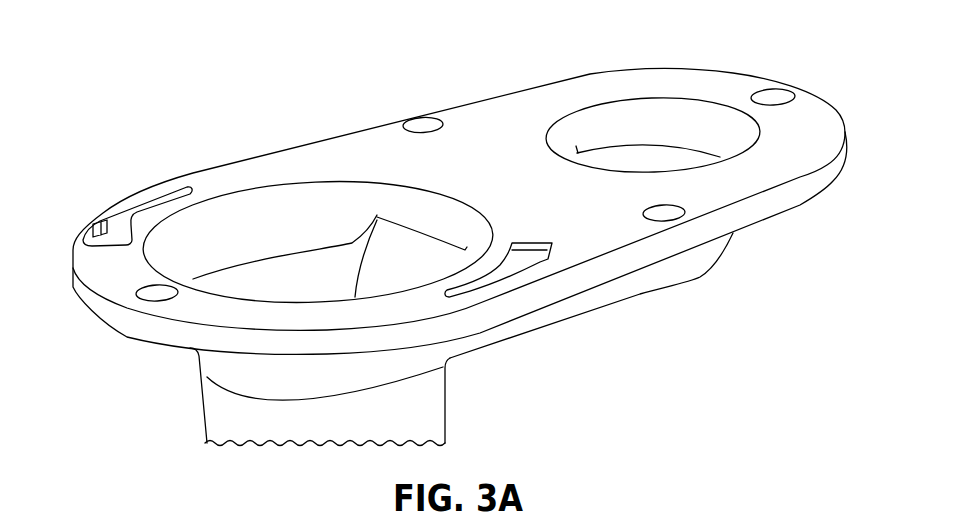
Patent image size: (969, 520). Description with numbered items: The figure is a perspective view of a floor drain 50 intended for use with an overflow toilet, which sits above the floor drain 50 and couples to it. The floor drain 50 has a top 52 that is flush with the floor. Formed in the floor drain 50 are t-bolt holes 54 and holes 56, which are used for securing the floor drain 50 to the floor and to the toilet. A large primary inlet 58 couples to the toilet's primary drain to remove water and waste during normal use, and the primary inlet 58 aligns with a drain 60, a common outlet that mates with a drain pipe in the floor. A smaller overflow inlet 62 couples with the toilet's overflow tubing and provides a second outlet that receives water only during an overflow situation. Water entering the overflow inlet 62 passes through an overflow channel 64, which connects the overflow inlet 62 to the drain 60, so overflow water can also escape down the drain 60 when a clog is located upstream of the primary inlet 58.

The floor drain 50 is at (326, 104).
The top 52 is at (810, 113).
The t-bolt holes 54 is at (118, 220).
The holes 56 is at (140, 297).
The primary inlet 58 is at (240, 210).
The drain 60 is at (207, 403).
The overflow inlet 62 is at (667, 118).
The overflow channel 64 is at (436, 253).